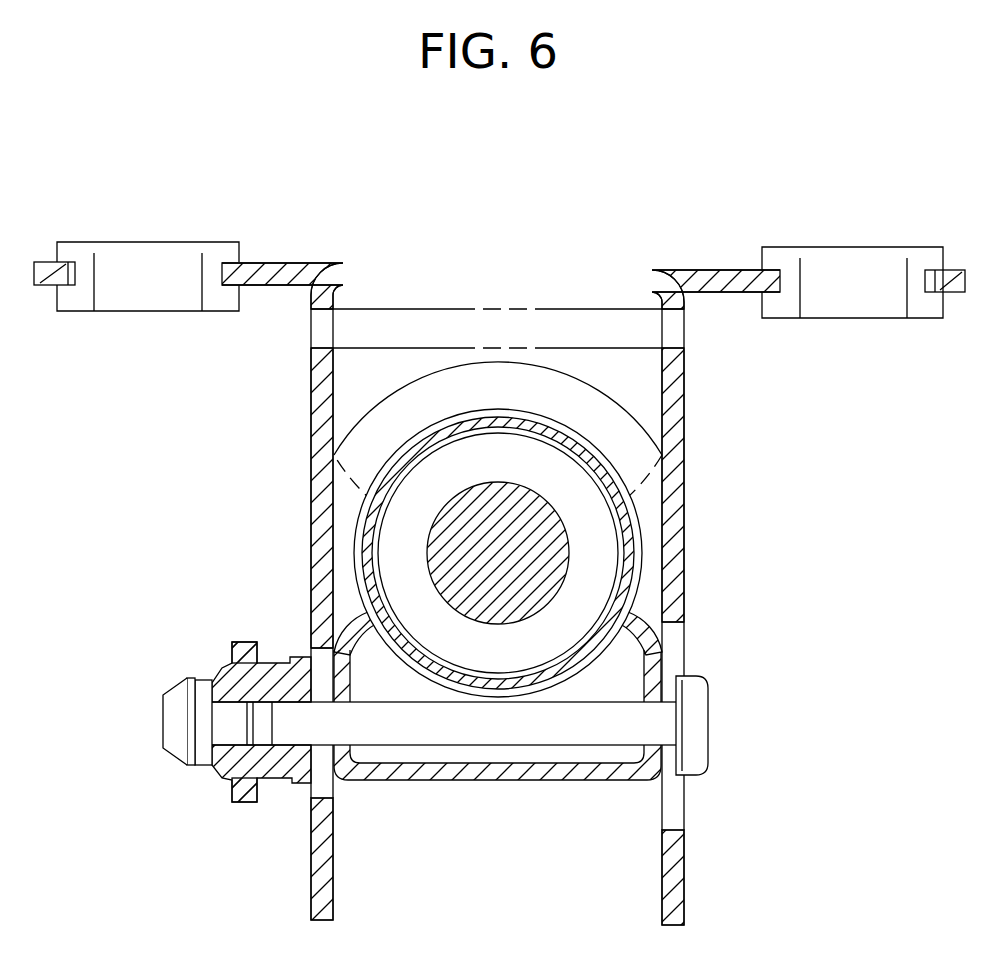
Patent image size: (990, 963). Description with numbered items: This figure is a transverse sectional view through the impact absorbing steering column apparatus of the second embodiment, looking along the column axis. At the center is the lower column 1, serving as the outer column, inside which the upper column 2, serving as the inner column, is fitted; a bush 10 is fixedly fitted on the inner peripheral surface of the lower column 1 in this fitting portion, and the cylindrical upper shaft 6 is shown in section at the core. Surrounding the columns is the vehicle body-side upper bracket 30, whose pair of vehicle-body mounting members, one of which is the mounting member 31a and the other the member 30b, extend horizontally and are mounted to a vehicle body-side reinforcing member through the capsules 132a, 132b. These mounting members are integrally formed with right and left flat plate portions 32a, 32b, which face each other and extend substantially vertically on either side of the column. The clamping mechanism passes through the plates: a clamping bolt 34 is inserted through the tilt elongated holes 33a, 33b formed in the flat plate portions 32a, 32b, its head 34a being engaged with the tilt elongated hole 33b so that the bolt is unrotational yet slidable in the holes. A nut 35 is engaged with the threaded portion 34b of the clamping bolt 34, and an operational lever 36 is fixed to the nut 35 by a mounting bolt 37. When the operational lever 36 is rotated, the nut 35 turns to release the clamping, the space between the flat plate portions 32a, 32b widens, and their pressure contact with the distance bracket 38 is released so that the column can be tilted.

The lower column 1 is at (430, 375).
The bush 10 is at (487, 408).
The upper column 2 is at (540, 418).
The upper shaft 6 is at (548, 505).
The upper bracket 30 is at (737, 238).
The right arm portion 30b is at (700, 268).
The vehicle-body mounting member 31a is at (283, 260).
The flat plate portion 32a is at (311, 402).
The flat plate portion 32b is at (686, 386).
The tilt elongated hole 33a is at (333, 790).
The tilt elongated hole 33b is at (666, 826).
The clamping bolt 34 is at (443, 746).
The head 34a is at (709, 702).
The threaded portion 34b is at (291, 735).
The nut 35 is at (272, 660).
The operational lever 36 is at (230, 780).
The mounting bolt 37 is at (163, 712).
The distance bracket 38 is at (582, 781).
The capsule 132a is at (155, 255).
The capsule 132b is at (875, 305).